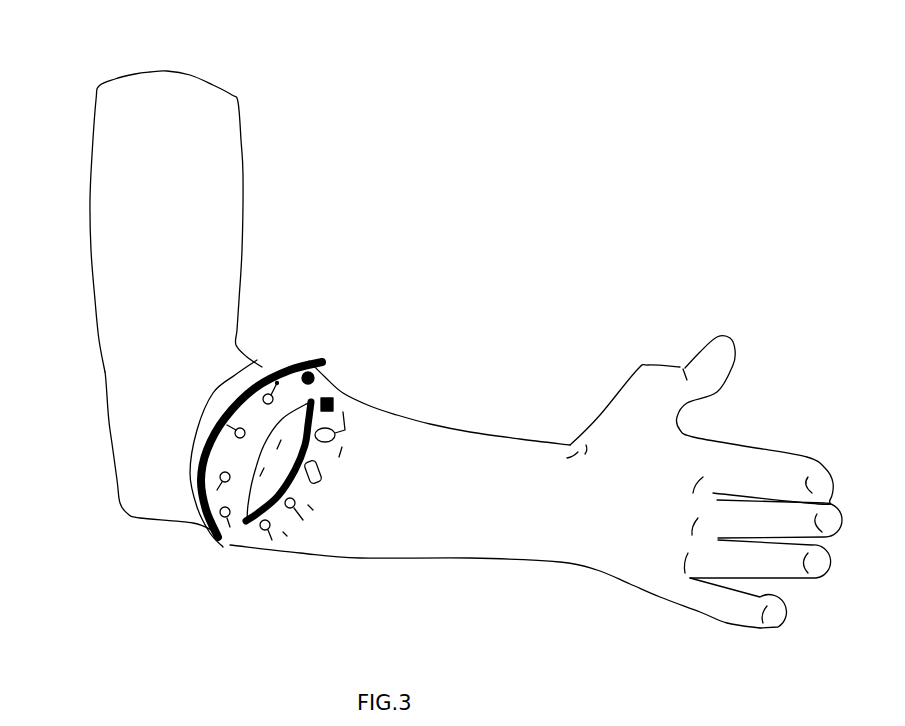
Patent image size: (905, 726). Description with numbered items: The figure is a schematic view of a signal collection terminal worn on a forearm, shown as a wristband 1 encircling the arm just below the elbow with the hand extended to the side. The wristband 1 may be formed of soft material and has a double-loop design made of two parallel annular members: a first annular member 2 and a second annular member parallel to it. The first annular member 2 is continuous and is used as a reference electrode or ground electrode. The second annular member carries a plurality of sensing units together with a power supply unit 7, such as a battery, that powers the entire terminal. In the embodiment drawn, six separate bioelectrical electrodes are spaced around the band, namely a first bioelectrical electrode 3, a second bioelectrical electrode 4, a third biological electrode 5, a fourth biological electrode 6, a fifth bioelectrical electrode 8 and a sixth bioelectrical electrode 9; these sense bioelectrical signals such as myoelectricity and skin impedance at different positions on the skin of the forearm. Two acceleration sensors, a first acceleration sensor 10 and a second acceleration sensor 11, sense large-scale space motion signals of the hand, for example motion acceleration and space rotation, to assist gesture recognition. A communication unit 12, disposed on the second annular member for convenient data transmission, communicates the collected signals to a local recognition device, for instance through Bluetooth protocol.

The wristband 1 is at (179, 490).
The first annular member 2 is at (195, 443).
The first bioelectrical electrode 3 is at (230, 527).
The second bioelectrical electrode 4 is at (217, 490).
The third biological electrode 5 is at (227, 425).
The fourth biological electrode 6 is at (277, 383).
The power supply unit 7 is at (318, 368).
The fifth bioelectrical electrode 8 is at (272, 540).
The sixth bioelectrical electrode 9 is at (303, 520).
The first acceleration sensor 10 is at (324, 481).
The second acceleration sensor 11 is at (345, 431).
The communication unit 12 is at (337, 394).